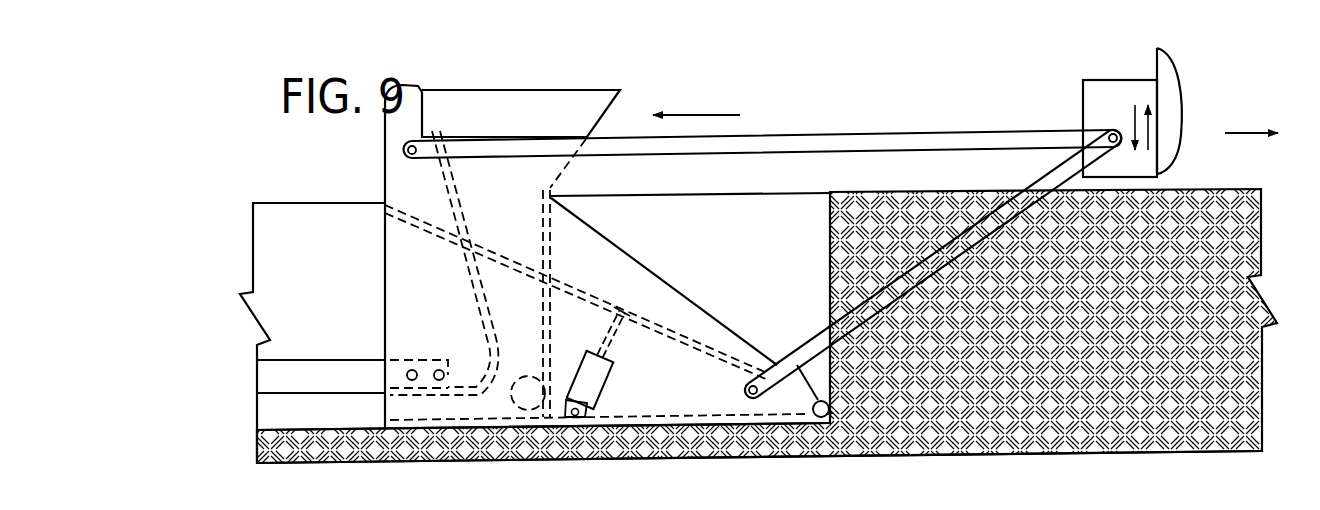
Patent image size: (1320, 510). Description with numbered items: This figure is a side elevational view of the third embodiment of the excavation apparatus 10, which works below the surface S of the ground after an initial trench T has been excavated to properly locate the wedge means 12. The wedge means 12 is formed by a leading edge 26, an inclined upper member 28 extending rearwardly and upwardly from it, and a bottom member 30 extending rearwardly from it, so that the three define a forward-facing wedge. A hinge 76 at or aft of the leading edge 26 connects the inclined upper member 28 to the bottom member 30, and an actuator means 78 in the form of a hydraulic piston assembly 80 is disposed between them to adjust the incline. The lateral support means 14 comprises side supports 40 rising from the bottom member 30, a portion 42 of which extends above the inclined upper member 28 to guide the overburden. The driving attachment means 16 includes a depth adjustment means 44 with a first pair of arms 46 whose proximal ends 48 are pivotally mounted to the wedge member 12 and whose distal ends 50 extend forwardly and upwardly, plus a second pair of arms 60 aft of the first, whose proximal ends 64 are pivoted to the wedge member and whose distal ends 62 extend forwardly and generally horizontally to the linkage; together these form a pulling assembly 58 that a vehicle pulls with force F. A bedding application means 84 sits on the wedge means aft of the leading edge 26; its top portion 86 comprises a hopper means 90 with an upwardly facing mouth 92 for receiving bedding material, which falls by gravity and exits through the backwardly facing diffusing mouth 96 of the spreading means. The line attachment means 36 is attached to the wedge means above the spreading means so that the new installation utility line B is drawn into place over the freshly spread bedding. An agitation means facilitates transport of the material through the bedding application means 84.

The excavation apparatus 10 is at (724, 81).
The wedge means 12 is at (748, 430).
The lateral support means 14 is at (705, 293).
The driving attachment means 16 is at (925, 113).
The leading edge 26 is at (833, 413).
The inclined upper member 28 is at (730, 350).
The bottom member 30 is at (683, 423).
The line attachment means 36 is at (403, 353).
The side supports 40 is at (703, 413).
The portion of side supports 42 is at (637, 290).
The depth adjustment means 44 is at (1037, 123).
The first pair of arms 46 is at (968, 238).
The proximal ends of arms 48 is at (797, 365).
The distal ends of arms 50 is at (1120, 107).
The pulling assembly 58 is at (1100, 72).
The second pair of arms 60 is at (843, 137).
The distal ends of second arms 62 is at (1078, 135).
The proximal ends of second arms 64 is at (445, 138).
The hinge 76 is at (837, 418).
The actuator means 78 is at (562, 437).
The hydraulic piston assembly 80 is at (578, 418).
The bedding application means 84 is at (570, 85).
The top portion 86 is at (622, 88).
The hopper means 90 is at (712, 113).
The upwardly facing mouth 92 is at (525, 110).
The diffusing mouth 96 is at (385, 410).
The first trench T is at (323, 270).
The surface of the ground S is at (887, 193).
The installation utility line B is at (307, 380).
The force F is at (1251, 119).